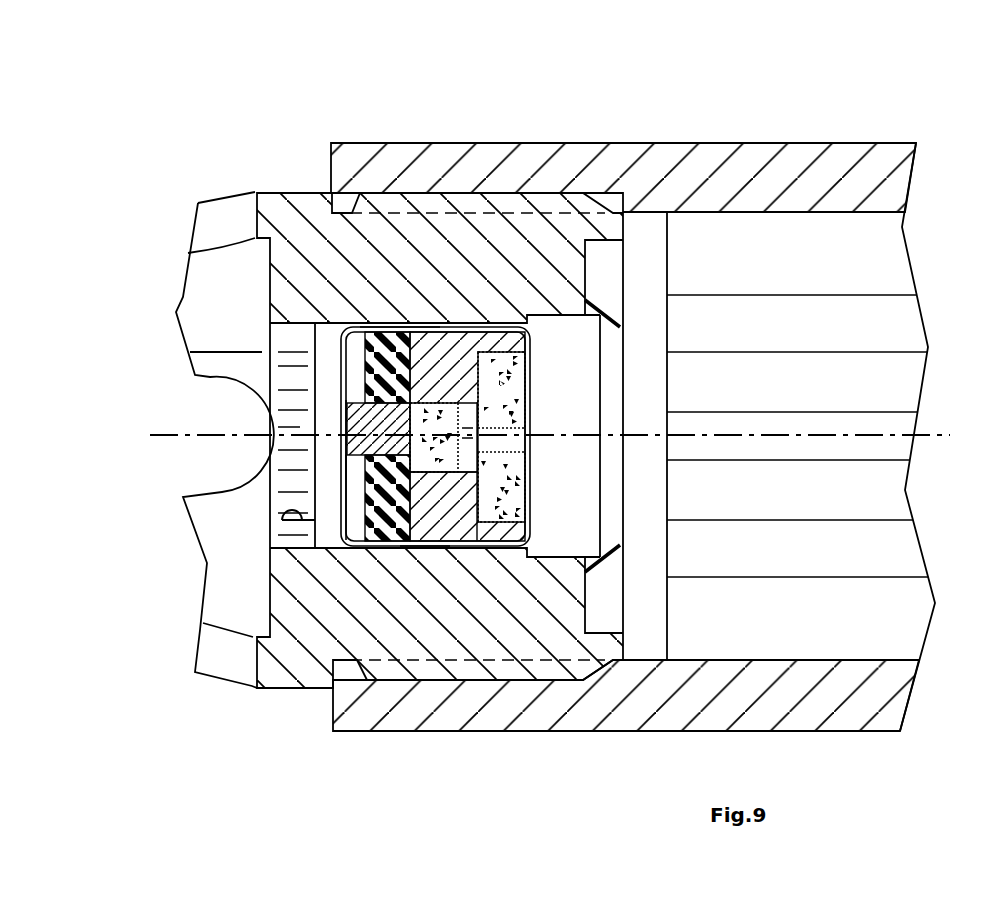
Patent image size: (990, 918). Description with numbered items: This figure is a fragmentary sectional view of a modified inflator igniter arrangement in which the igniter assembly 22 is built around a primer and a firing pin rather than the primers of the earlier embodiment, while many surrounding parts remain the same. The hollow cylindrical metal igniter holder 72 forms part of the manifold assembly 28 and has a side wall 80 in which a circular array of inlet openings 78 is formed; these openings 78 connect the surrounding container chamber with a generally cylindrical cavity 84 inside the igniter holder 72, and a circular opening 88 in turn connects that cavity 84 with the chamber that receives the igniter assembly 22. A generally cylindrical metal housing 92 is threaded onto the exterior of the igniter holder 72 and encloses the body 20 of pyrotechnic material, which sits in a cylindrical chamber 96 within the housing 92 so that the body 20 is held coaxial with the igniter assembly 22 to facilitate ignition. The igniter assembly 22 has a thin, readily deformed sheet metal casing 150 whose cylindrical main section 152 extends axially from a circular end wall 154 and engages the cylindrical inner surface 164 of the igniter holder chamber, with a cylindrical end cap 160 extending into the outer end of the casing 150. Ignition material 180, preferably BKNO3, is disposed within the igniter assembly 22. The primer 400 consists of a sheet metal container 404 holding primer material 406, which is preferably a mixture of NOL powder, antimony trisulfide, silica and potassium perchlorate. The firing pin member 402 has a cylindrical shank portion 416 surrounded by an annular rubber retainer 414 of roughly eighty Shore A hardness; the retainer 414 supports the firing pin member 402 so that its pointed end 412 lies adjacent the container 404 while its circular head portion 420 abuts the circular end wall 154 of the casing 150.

The body of pyrotechnic material 20 is at (860, 247).
The igniter assembly 22 is at (395, 323).
The manifold assembly 28 is at (266, 188).
The igniter holder 72 is at (257, 690).
The inlet openings 78 is at (235, 215).
The side wall 80 is at (306, 207).
The cavity 84 is at (260, 271).
The circular opening 88 is at (290, 410).
The housing 92 is at (870, 705).
The chamber 96 is at (648, 645).
The casing 150 is at (340, 473).
The main section 152 is at (449, 318).
The end wall 154 is at (343, 350).
The end cap 160 is at (537, 384).
The inner surface 164 is at (283, 523).
The ignition material 180 is at (510, 487).
The primer 400 is at (450, 482).
The firing pin member 402 is at (357, 413).
The container 404 is at (427, 552).
The primer material 406 is at (447, 447).
The pointed end 412 is at (393, 517).
The retainer 414 is at (383, 345).
The shank portion 416 is at (398, 362).
The head portion 420 is at (343, 443).